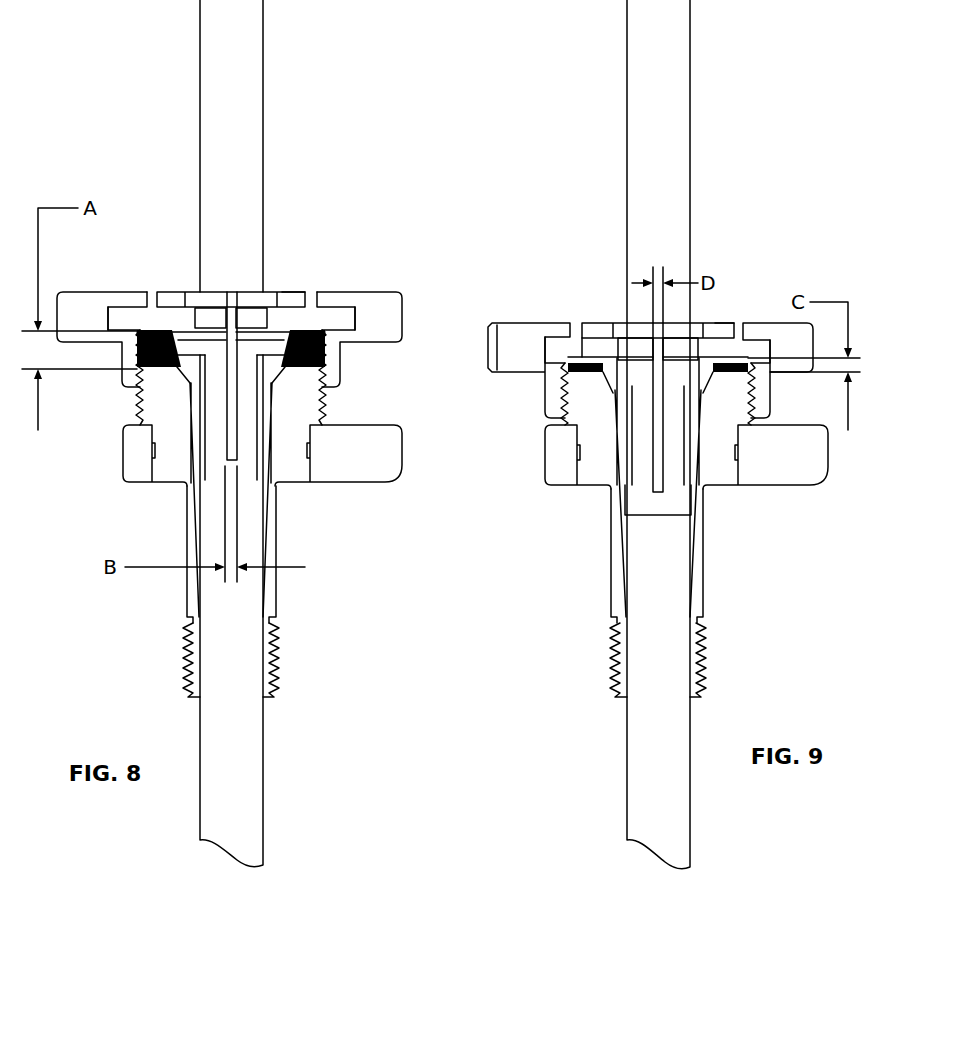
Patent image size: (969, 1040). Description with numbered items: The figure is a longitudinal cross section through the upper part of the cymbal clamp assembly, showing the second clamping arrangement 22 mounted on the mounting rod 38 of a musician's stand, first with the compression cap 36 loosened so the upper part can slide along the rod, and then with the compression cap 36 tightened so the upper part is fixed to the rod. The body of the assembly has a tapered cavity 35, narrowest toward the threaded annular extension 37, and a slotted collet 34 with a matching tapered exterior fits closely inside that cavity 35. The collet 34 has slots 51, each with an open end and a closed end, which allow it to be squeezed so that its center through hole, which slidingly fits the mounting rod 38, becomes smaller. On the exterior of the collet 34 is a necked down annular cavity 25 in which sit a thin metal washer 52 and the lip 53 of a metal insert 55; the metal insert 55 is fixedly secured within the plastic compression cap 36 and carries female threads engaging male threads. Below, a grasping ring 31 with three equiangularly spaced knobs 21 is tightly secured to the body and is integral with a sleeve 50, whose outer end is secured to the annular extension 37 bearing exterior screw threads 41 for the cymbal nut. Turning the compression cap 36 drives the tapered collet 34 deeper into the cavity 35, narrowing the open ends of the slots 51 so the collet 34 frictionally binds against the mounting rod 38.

In FIG. 8, the mounting rod 38 is at (245, 110).
In FIG. 9, the mounting rod 38 is at (658, 120).
In FIG. 8, the second clamping arrangement 22 is at (282, 290).
In FIG. 9, the second clamping arrangement 22 is at (715, 320).
In FIG. 8, the necked down annular cavity 25 is at (177, 302).
In FIG. 9, the necked down annular cavity 25 is at (610, 323).
In FIG. 8, the thin metal washer 52 is at (207, 317).
In FIG. 9, the thin metal washer 52 is at (708, 358).
In FIG. 8, the lip 53 is at (335, 320).
In FIG. 9, the lip 53 is at (557, 347).
In FIG. 8, the metal insert 55 is at (288, 313).
In FIG. 9, the metal insert 55 is at (597, 347).
In FIG. 8, the compression cap 36 is at (395, 313).
In FIG. 9, the compression cap 36 is at (797, 343).
In FIG. 8, the slotted collet 34 is at (248, 382).
In FIG. 9, the slotted collet 34 is at (622, 377).
In FIG. 8, the slots 51 is at (202, 385).
In FIG. 9, the slots 51 is at (688, 413).
In FIG. 8, the knobs 21 is at (393, 443).
In FIG. 9, the knobs 21 is at (807, 447).
In FIG. 8, the grasping ring 31 is at (128, 438).
In FIG. 9, the grasping ring 31 is at (560, 442).
In FIG. 8, the cavity 35 is at (205, 450).
In FIG. 9, the cavity 35 is at (667, 463).
In FIG. 8, the sleeve 50 is at (278, 597).
In FIG. 9, the sleeve 50 is at (705, 598).
In FIG. 8, the annular extension 37 is at (267, 622).
In FIG. 9, the annular extension 37 is at (622, 622).
In FIG. 8, the exterior screw threads 41 is at (283, 660).
In FIG. 9, the exterior screw threads 41 is at (613, 663).